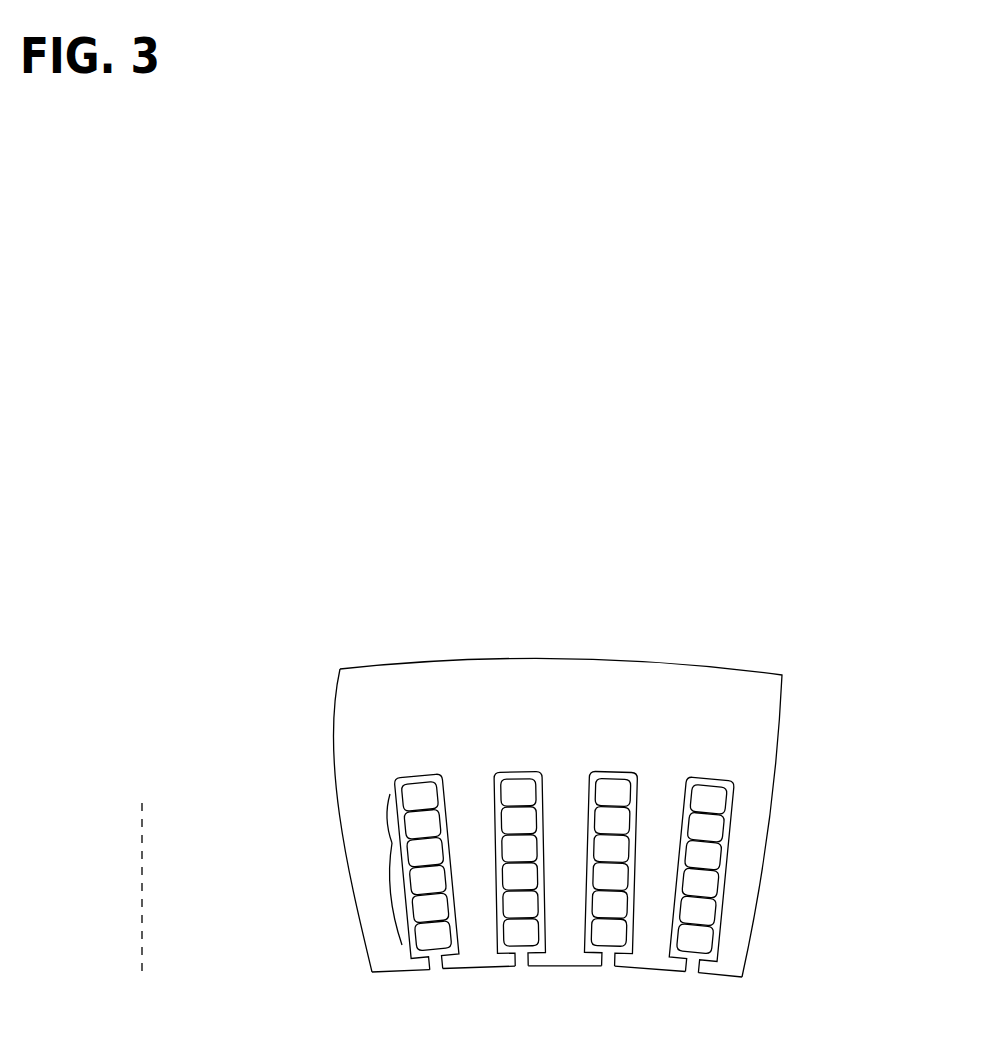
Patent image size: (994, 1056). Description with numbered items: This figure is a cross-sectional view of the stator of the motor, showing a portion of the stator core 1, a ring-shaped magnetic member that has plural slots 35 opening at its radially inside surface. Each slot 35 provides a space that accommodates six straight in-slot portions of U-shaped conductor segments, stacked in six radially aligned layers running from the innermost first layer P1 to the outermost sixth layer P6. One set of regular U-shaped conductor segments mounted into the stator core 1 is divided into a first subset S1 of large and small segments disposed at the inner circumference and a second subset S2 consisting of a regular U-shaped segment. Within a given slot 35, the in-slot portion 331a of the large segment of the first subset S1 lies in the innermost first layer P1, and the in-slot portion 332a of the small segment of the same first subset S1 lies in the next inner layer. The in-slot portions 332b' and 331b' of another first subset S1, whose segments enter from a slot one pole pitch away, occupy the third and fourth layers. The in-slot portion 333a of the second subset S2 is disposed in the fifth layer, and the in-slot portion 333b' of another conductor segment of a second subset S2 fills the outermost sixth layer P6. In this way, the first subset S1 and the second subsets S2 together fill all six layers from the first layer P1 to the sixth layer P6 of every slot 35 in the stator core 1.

The stator core 1 is at (752, 713).
The slot 35 is at (512, 772).
The in-slot portion 333b' is at (805, 792).
The in-slot portion 333a is at (713, 827).
The in-slot portion 331b' is at (798, 853).
The in-slot portion 332b' is at (796, 883).
The in-slot portion 332a is at (706, 912).
The in-slot portion 331a is at (708, 942).
The sixth layer P6 is at (388, 792).
The second subset S2 is at (380, 813).
The first subset S1 is at (382, 893).
The first layer P1 is at (403, 942).